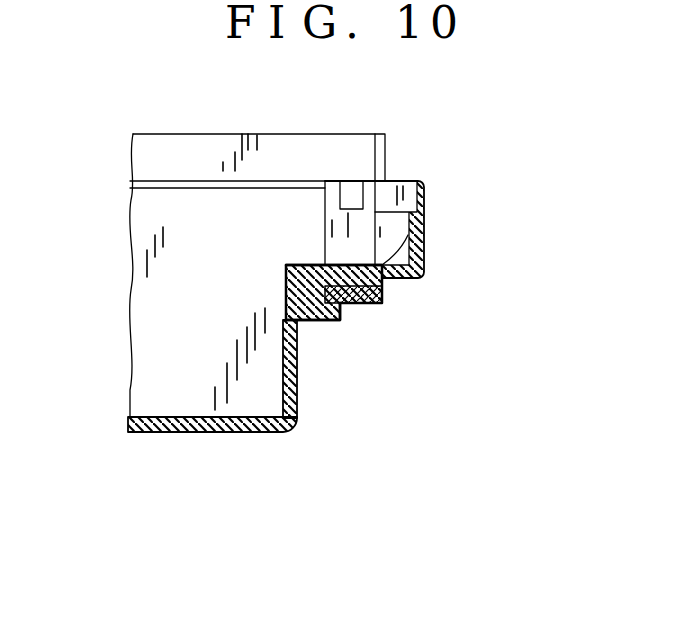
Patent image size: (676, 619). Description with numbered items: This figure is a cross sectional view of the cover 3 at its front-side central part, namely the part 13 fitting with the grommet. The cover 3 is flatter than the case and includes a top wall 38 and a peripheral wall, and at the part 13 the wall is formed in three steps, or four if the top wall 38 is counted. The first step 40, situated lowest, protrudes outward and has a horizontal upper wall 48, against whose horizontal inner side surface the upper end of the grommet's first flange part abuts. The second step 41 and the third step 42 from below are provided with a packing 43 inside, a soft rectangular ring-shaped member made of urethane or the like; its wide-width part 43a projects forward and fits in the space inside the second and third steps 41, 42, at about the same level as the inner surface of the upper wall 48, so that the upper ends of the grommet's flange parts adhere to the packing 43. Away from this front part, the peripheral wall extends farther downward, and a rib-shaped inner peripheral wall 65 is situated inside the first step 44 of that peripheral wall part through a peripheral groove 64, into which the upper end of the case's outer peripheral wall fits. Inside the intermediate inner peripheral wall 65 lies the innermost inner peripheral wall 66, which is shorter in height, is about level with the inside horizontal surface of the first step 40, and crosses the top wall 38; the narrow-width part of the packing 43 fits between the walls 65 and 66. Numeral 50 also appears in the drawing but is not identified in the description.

The cover 3 is at (185, 442).
The part fitting with the grommet 13 is at (354, 335).
The top wall 38 is at (222, 433).
The first step 40 is at (426, 268).
The second step 41 is at (378, 304).
The third step 42 is at (334, 306).
The packing 43 is at (284, 276).
The wide-width part of the packing 43a is at (320, 255).
The first step of the peripheral wall part 44 is at (387, 150).
The upper wall 48 is at (424, 227).
The bottom wall of housing 50 is at (385, 279).
The peripheral groove 64 is at (352, 208).
The inner peripheral wall 65 is at (326, 212).
The inner peripheral wall 66 is at (285, 285).